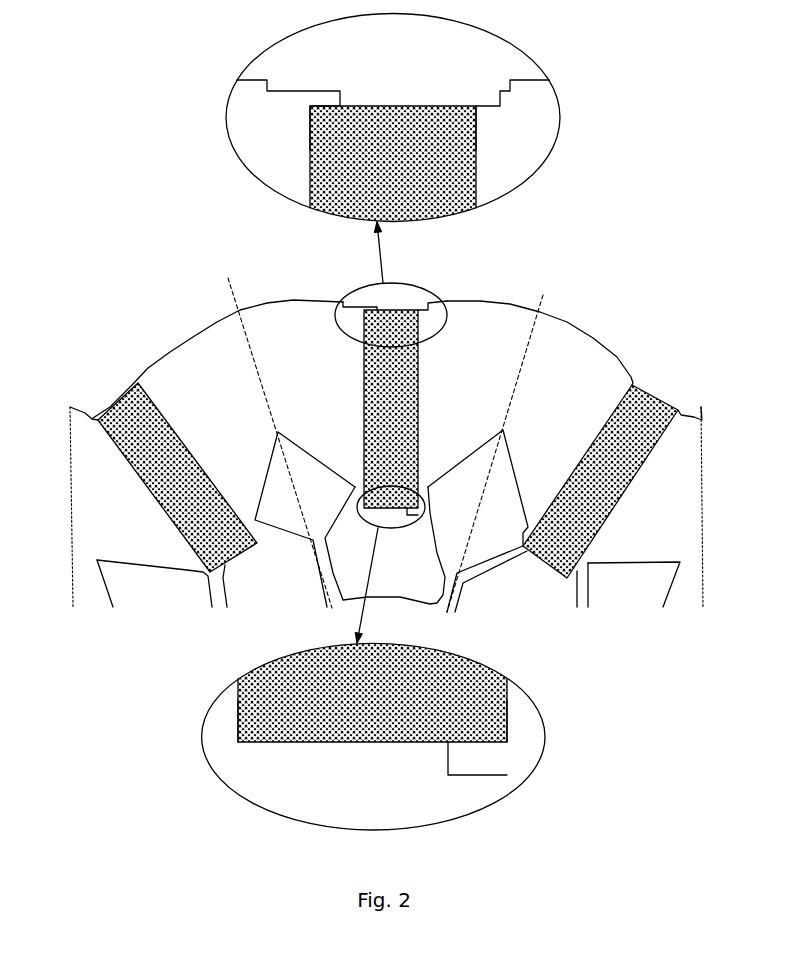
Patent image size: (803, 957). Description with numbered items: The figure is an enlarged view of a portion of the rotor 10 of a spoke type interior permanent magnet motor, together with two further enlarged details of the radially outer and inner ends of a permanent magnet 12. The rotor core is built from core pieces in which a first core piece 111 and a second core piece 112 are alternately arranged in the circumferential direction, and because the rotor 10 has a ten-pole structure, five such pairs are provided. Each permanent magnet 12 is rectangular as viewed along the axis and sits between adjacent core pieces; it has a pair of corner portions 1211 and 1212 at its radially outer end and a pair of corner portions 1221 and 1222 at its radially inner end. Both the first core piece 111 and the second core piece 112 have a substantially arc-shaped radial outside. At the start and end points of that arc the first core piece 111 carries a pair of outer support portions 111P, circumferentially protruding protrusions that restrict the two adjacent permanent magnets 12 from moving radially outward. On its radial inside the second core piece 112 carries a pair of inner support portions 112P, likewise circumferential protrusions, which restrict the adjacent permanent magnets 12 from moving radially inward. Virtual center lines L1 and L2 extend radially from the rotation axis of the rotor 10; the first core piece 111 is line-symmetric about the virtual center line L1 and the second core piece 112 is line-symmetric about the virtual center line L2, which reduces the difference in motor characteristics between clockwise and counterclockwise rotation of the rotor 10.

The rotor 10 is at (213, 247).
The first core piece 111 is at (293, 320).
The second core piece 112 is at (505, 317).
The permanent magnet 12 is at (405, 310).
The virtual center line L1 is at (237, 307).
The virtual center line L2 is at (547, 298).
The outer support portion 111P is at (285, 88).
The corner portion 1211 is at (318, 98).
The corner portion 1212 is at (479, 97).
The corner portion 1221 is at (238, 746).
The inner support portion 112P is at (463, 777).
The corner portion 1222 is at (508, 748).